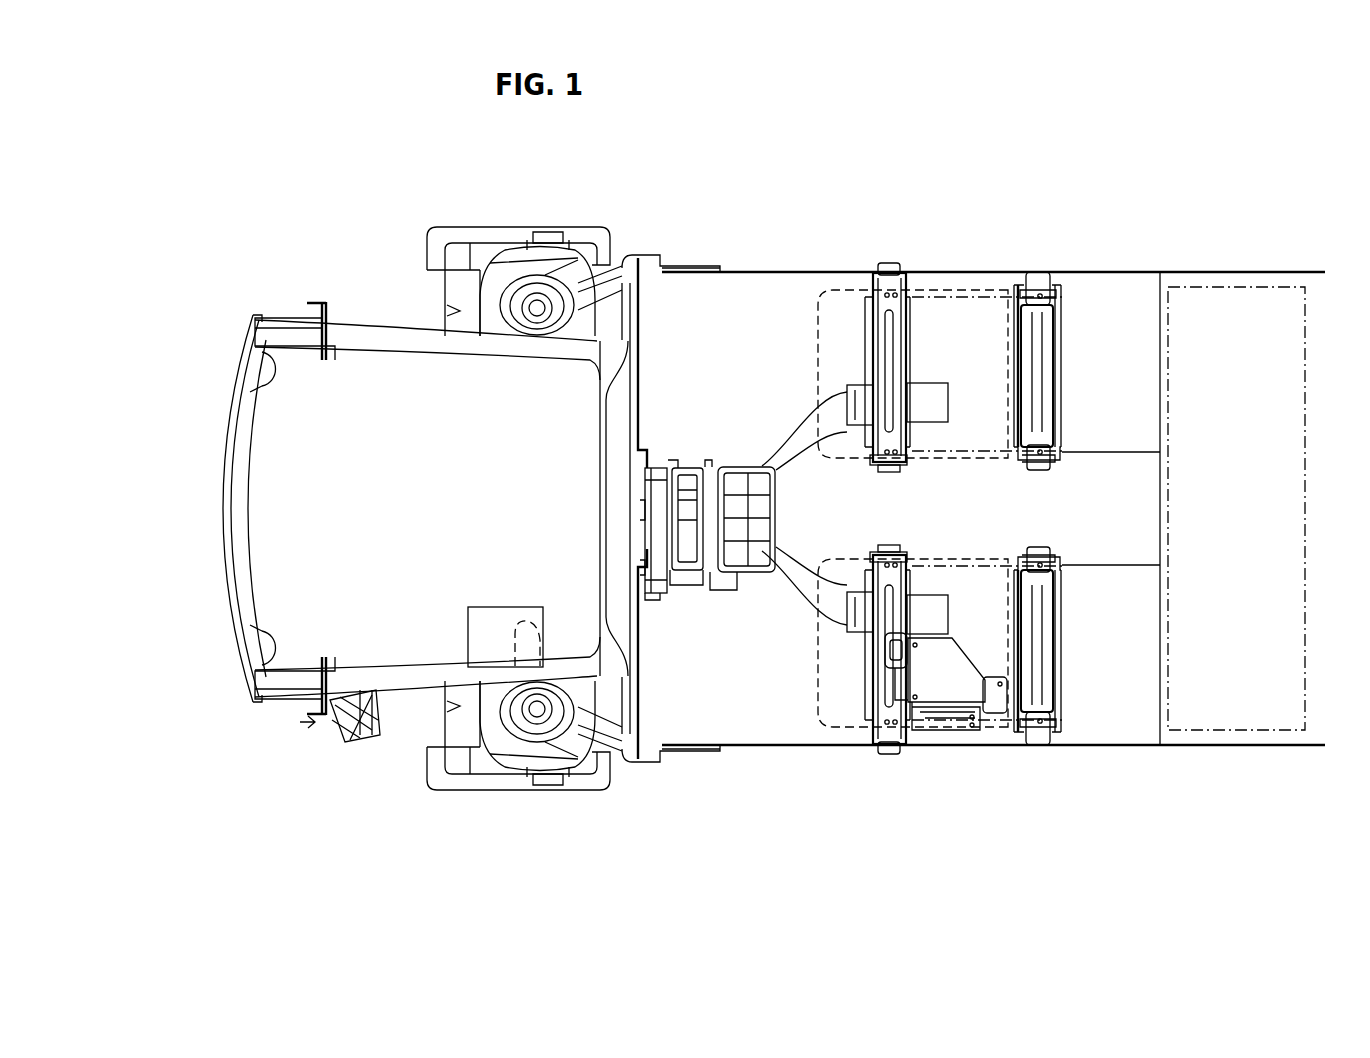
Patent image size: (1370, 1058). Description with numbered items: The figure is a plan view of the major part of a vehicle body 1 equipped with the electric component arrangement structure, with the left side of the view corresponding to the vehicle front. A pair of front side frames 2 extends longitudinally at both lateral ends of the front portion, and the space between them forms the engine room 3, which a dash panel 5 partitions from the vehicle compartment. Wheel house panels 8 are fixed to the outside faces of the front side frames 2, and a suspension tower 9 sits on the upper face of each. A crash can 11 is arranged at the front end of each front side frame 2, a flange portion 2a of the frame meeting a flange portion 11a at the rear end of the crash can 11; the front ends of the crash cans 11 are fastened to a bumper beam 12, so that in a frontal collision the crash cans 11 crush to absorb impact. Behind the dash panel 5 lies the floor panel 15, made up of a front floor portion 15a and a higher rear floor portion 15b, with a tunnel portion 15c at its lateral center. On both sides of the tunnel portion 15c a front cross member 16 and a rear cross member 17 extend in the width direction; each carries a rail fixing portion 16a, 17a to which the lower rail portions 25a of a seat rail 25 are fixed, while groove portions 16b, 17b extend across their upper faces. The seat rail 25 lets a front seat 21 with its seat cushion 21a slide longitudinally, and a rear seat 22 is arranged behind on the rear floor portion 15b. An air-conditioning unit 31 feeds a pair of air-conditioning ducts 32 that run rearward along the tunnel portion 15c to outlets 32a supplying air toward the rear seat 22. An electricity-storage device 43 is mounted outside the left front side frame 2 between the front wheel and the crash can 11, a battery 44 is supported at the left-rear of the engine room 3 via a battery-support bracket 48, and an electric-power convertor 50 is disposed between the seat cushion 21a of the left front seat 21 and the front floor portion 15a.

The vehicle body 1 is at (735, 186).
The front side frame 2 is at (400, 335).
The flange portion 2a is at (326, 358).
The engine room 3 is at (422, 505).
The dash panel 5 is at (597, 415).
The wheel house panel 8 is at (458, 280).
The suspension tower 9 is at (528, 300).
The crash can 11 is at (290, 325).
The flange portion 11a is at (322, 360).
The bumper beam 12 is at (232, 490).
The floor panel 15 is at (993, 464).
The front floor portion 15a is at (768, 300).
The rear floor portion 15b is at (1200, 305).
The tunnel portion 15c is at (1108, 470).
The front cross member 16 is at (831, 509).
The rail fixing portion 16a is at (893, 293).
The groove portion 16b is at (889, 375).
The rear cross member 17 is at (1073, 509).
The rail fixing portion 17a is at (1040, 290).
The groove portion 17b is at (1037, 362).
The front seat 21 is at (873, 567).
The seat cushion 21a is at (818, 695).
The rear seat 22 is at (1283, 290).
The seat rail 25 is at (940, 567).
The lower rail portion 25a is at (935, 300).
The air-conditioning unit 31 is at (704, 606).
The air-conditioning duct 32 is at (858, 507).
The outlet 32a is at (953, 390).
The electricity-storage device 43 is at (332, 742).
The battery 44 is at (480, 607).
The battery-support bracket 48 is at (525, 620).
The electric-power convertor 50 is at (979, 653).